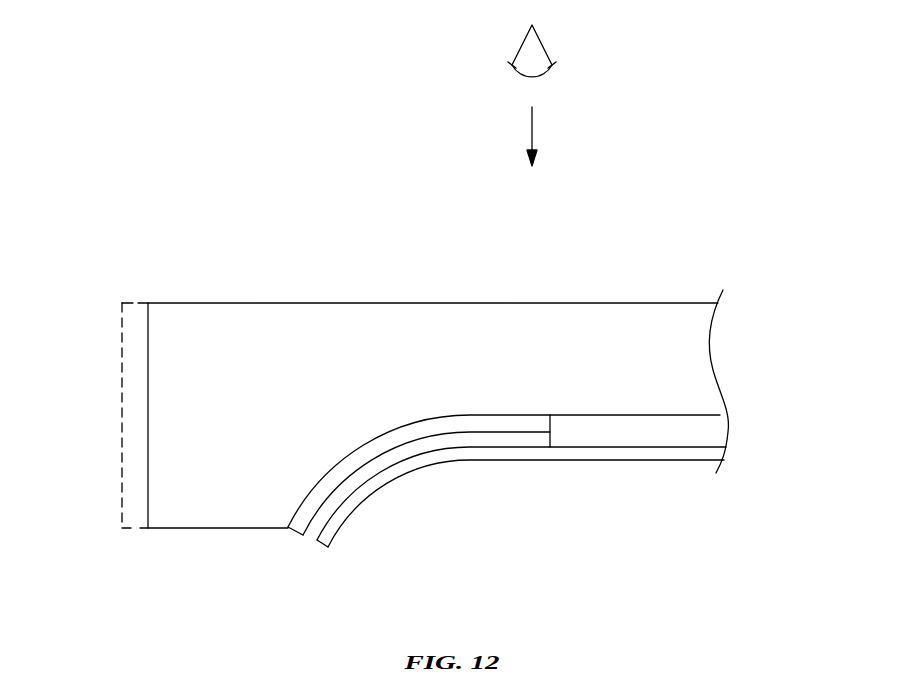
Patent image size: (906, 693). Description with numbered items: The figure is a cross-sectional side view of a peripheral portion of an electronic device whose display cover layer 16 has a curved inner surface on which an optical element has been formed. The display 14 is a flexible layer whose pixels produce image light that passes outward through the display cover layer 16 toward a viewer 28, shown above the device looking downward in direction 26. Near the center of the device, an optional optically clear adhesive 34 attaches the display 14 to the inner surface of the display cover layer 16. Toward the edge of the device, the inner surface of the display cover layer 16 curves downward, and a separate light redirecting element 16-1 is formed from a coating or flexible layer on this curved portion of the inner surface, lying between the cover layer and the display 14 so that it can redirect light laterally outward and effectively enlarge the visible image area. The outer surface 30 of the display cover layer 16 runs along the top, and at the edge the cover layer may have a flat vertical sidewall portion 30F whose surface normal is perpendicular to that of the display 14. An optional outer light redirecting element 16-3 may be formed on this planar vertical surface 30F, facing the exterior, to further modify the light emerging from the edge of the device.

The viewer 28 is at (547, 43).
The direction 26 is at (532, 125).
The outer surface 30 is at (490, 302).
The planar vertical sidewall portion 30F is at (148, 380).
The light redirecting element 16-3 is at (122, 448).
The display cover layer 16 is at (697, 362).
The light redirecting element 16-1 is at (298, 520).
The optically clear adhesive 34 is at (708, 433).
The display 14 is at (393, 473).